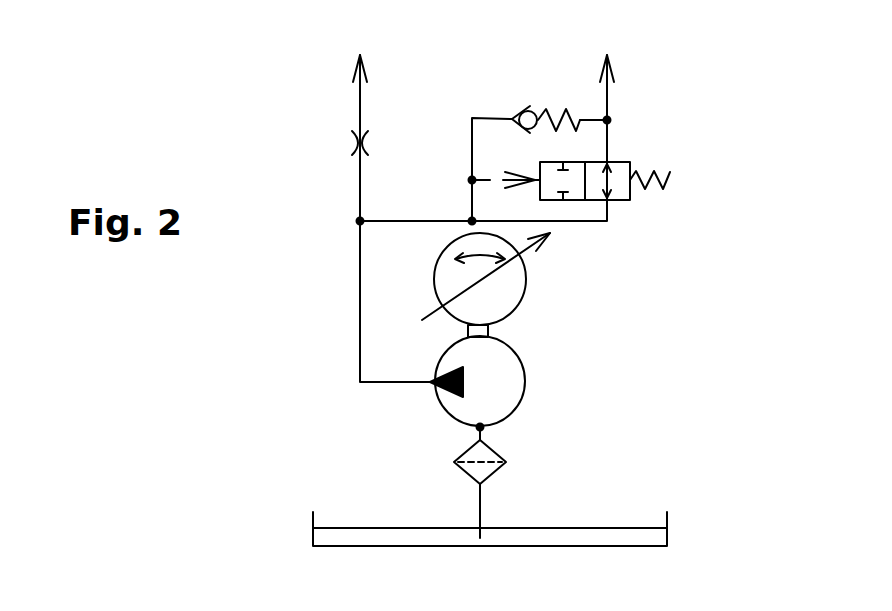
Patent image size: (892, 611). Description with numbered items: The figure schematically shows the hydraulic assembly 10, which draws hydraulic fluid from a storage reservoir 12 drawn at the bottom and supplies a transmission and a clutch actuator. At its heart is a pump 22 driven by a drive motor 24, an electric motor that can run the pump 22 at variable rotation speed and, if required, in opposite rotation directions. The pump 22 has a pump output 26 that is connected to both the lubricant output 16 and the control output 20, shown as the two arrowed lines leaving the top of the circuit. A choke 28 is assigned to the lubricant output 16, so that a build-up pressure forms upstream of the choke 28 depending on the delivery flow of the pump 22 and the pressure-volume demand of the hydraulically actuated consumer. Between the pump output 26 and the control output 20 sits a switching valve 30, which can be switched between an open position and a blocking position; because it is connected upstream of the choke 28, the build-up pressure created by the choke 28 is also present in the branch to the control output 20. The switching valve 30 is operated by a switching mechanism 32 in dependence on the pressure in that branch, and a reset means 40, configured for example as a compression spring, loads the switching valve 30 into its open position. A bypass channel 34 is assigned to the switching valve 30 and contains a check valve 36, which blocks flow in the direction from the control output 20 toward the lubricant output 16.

The hydraulic assembly 10 is at (712, 60).
The storage reservoir 12 is at (672, 518).
The lubricant output 16 is at (379, 205).
The control output 20 is at (493, 127).
The pump 22 is at (505, 385).
The drive motor 24 is at (527, 280).
The pump output 26 is at (430, 385).
The choke 28 is at (353, 143).
The switching valve 30 is at (623, 162).
The switching mechanism 32 is at (538, 176).
The bypass channel 34 is at (492, 118).
The check valve 36 is at (538, 110).
The reset means 40 is at (670, 175).